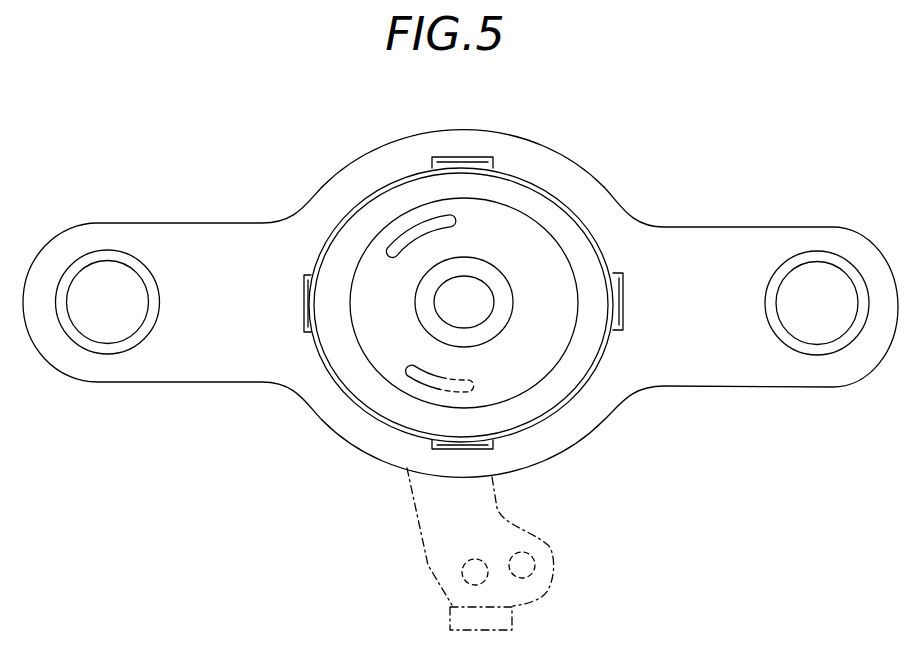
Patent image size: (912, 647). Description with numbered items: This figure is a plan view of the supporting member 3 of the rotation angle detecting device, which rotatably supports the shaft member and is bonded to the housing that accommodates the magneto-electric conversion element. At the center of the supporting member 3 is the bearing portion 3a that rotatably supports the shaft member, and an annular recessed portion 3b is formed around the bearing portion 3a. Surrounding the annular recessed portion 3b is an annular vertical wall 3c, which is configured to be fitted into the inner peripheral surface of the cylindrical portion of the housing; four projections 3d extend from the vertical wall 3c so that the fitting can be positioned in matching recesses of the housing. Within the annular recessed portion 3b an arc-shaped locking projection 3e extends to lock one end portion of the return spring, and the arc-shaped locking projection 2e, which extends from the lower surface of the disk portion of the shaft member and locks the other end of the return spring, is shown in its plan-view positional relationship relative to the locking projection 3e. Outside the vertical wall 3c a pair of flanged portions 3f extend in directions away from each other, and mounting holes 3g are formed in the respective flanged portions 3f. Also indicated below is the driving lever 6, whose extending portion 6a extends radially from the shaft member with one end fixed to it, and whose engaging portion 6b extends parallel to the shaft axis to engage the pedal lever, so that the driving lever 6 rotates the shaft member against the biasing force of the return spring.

The supporting member 3 is at (460, 301).
The bearing portion 3a is at (488, 268).
The annular recessed portion 3b is at (555, 335).
The annular vertical wall 3c is at (577, 398).
The projections 3d is at (307, 328).
The locking projection 3e is at (452, 218).
The flanged portions 3f is at (200, 238).
The mounting holes 3g is at (115, 340).
The locking projection 2e is at (420, 383).
The driving lever 6 is at (485, 549).
The extending portion 6a is at (420, 500).
The engaging portion 6b is at (457, 620).